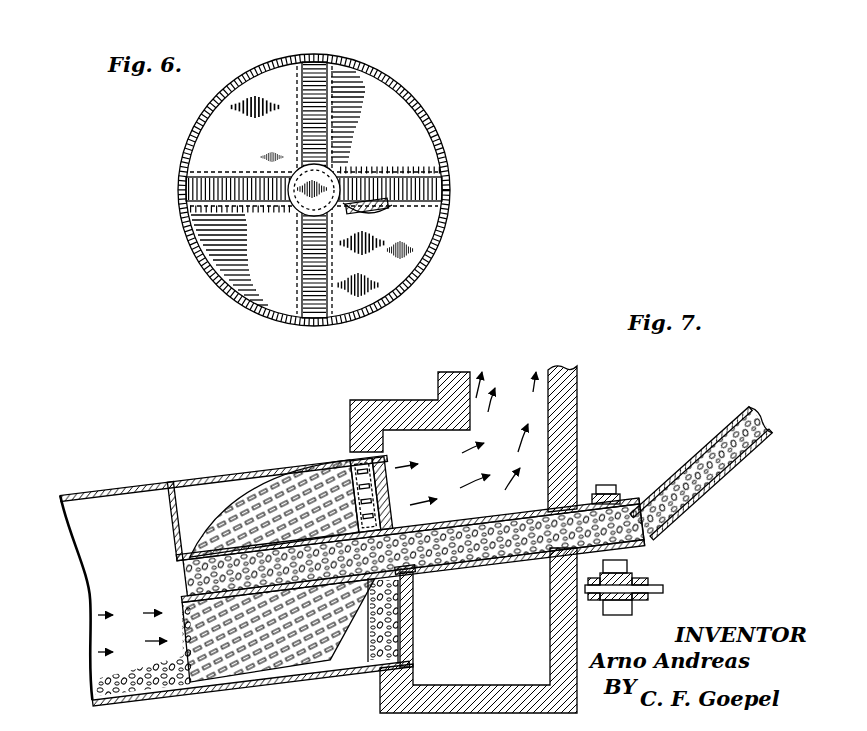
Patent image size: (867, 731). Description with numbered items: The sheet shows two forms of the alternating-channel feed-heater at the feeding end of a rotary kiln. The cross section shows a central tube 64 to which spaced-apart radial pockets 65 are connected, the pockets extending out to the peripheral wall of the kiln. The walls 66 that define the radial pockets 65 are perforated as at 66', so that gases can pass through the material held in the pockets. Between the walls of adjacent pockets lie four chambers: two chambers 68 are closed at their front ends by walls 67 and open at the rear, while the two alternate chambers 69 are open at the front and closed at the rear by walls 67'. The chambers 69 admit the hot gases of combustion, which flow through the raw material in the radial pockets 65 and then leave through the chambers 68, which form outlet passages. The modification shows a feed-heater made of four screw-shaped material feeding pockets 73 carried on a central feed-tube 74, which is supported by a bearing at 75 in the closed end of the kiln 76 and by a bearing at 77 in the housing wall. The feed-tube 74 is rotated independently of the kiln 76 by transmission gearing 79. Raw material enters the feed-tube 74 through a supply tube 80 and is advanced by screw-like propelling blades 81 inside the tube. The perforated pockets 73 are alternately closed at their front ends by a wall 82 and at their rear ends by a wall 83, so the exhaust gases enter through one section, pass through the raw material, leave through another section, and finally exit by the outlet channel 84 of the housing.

In FIG. 6, the central tube 64 is at (345, 173).
In FIG. 6, the radial pockets 65 is at (313, 77).
In FIG. 6, the walls 66 is at (357, 190).
In FIG. 6, the perforations 66' is at (367, 196).
In FIG. 6, the walls 67 is at (352, 163).
In FIG. 6, the walls 67' is at (334, 205).
In FIG. 6, the chambers 68 is at (243, 123).
In FIG. 6, the chambers 69 is at (380, 112).
In FIG. 7, the material feeding pockets 73 is at (240, 524).
In FIG. 7, the central feed-tube 74 is at (523, 560).
In FIG. 7, the bearing 75 is at (410, 585).
In FIG. 7, the kiln 76 is at (150, 481).
In FIG. 7, the bearing 77 is at (578, 480).
In FIG. 7, the transmission gearing 79 is at (627, 568).
In FIG. 7, the supply tube 80 is at (698, 445).
In FIG. 7, the propelling blades 81 is at (540, 557).
In FIG. 7, the wall 82 is at (177, 530).
In FIG. 7, the wall 83 is at (398, 637).
In FIG. 7, the outlet channel 84 is at (540, 389).